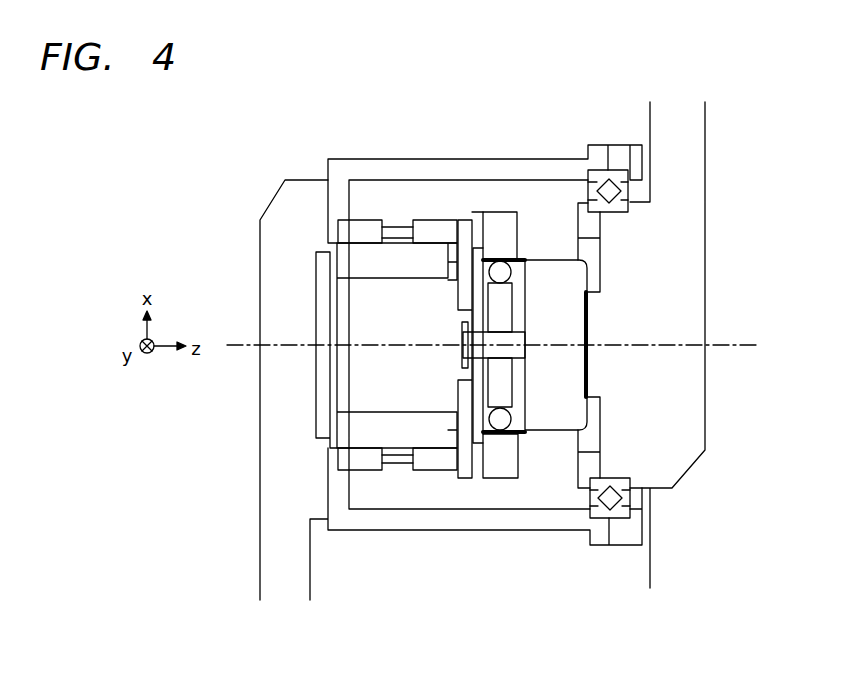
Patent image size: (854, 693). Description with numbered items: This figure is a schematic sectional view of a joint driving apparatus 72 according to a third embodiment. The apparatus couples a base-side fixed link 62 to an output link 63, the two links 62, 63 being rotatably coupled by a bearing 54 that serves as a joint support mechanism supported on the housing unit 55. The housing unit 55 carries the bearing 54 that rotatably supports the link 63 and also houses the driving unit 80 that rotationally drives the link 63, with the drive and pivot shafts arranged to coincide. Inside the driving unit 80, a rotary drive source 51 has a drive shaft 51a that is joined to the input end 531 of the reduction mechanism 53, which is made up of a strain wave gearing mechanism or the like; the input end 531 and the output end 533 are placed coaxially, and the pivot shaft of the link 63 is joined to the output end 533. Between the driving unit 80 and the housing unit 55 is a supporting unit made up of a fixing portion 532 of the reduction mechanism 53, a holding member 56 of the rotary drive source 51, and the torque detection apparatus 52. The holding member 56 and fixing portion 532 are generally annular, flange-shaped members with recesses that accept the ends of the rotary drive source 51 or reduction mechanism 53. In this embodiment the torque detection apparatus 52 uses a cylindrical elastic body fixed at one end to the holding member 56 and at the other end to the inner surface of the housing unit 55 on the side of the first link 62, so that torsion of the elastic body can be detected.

The joint driving apparatus 72 is at (280, 130).
The link 62 is at (282, 203).
The link 63 is at (693, 224).
The housing unit 55 is at (530, 523).
The driving unit 80 is at (393, 63).
The rotary drive source 51 is at (400, 295).
The torque detection apparatus 52 is at (352, 473).
The reduction mechanism 53 is at (595, 100).
The fixing portion 532 is at (492, 227).
The input end 531 is at (498, 293).
The output end 533 is at (552, 273).
The holding member 56 is at (468, 470).
The drive shaft 51a is at (520, 328).
The bearing 54 is at (618, 185).